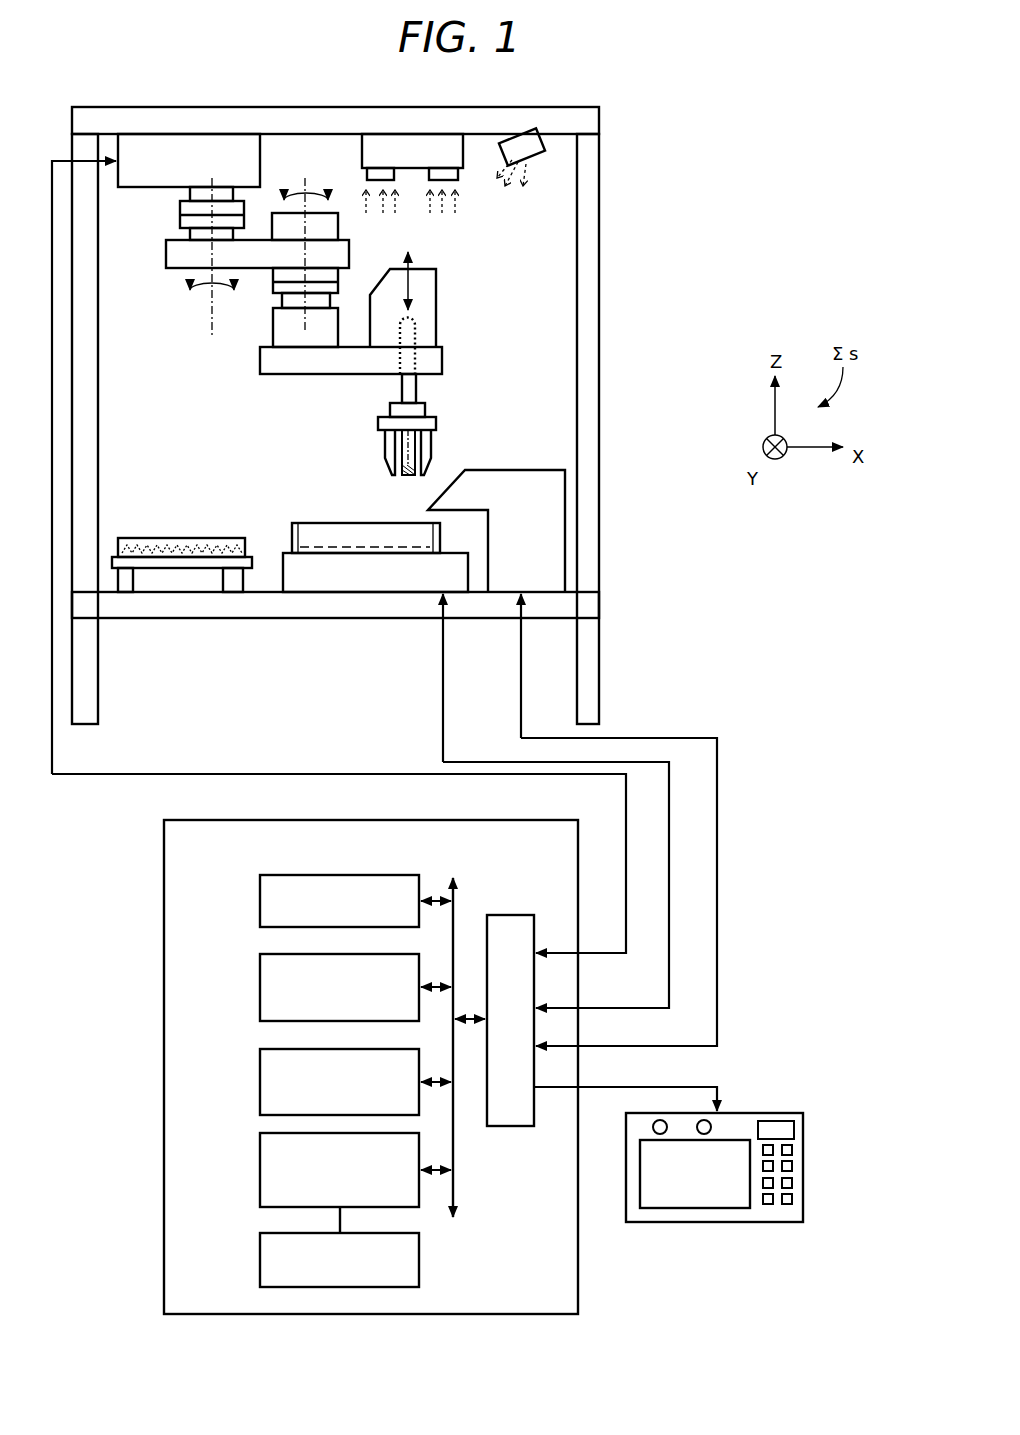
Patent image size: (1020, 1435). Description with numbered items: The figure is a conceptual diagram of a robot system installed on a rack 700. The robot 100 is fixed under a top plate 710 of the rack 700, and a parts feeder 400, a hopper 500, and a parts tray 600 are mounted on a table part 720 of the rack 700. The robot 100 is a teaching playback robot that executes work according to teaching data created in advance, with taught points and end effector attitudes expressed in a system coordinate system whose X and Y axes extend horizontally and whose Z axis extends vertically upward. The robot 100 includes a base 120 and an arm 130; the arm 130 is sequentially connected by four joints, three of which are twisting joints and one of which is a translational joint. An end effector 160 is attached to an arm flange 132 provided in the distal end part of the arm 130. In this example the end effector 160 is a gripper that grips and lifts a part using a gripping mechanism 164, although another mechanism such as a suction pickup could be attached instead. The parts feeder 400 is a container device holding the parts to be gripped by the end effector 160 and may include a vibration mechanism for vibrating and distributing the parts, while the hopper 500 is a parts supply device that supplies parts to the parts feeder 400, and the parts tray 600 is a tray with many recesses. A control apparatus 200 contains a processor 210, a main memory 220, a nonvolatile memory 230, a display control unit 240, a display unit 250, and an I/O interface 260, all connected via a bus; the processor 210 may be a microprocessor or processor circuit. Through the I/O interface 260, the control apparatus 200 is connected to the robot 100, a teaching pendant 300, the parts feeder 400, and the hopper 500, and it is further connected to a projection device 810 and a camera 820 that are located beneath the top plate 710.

The robot 100 is at (309, 304).
The base 120 is at (252, 308).
The arm 130 is at (242, 370).
The arm flange 132 is at (430, 408).
The end effector 160 is at (362, 439).
The gripping mechanism 164 is at (383, 445).
The control apparatus 200 is at (371, 1050).
The processor 210 is at (260, 897).
The main memory 220 is at (260, 987).
The nonvolatile memory 230 is at (260, 1083).
The display control unit 240 is at (260, 1165).
The display unit 250 is at (260, 1256).
The I/O interface 260 is at (506, 915).
The teaching pendant 300 is at (742, 1113).
The parts feeder 400 is at (338, 538).
The hopper 500 is at (542, 527).
The parts tray 600 is at (193, 537).
The rack 700 is at (373, 398).
The top plate 710 is at (305, 107).
The table part 720 is at (599, 610).
The projection device 810 is at (523, 140).
The camera 820 is at (415, 150).